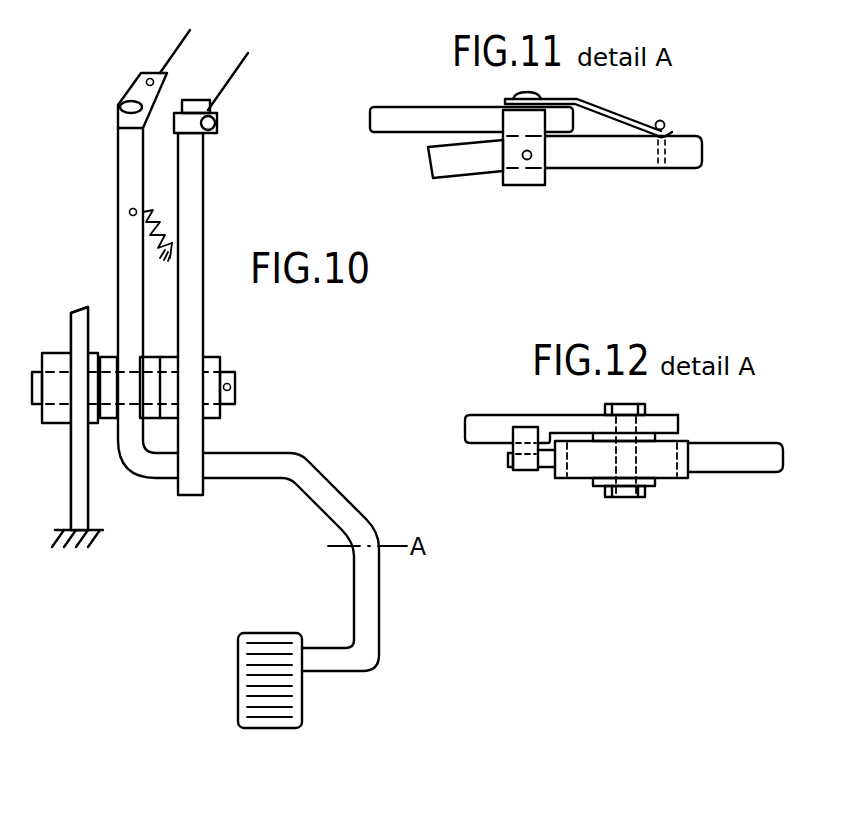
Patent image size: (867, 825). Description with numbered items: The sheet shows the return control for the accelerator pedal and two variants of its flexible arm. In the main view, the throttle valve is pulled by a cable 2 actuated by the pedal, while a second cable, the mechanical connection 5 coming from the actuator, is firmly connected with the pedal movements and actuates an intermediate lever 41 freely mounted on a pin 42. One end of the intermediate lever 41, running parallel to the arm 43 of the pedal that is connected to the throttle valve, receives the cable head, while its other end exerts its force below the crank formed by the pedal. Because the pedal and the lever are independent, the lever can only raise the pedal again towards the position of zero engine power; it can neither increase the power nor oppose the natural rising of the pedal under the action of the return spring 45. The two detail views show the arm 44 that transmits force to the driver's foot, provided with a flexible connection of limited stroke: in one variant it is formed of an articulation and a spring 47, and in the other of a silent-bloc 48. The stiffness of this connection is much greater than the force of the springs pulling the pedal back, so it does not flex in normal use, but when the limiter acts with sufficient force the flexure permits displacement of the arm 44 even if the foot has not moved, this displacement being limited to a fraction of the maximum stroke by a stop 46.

In FIG. 10, the cable 2 is at (173, 50).
In FIG. 10, the mechanical connection 5 is at (246, 67).
In FIG. 10, the intermediate lever 41 is at (204, 176).
In FIG. 10, the pin 42 is at (235, 377).
In FIG. 10, the arm 43 is at (118, 243).
In FIG. 10, the arm 44 is at (353, 600).
In FIG. 10, the return spring 45 is at (160, 225).
In FIG. 11, the stop 46 is at (423, 143).
In FIG. 12, the stop 46 is at (512, 462).
In FIG. 11, the spring 47 is at (617, 110).
In FIG. 12, the silent-bloc 48 is at (672, 480).